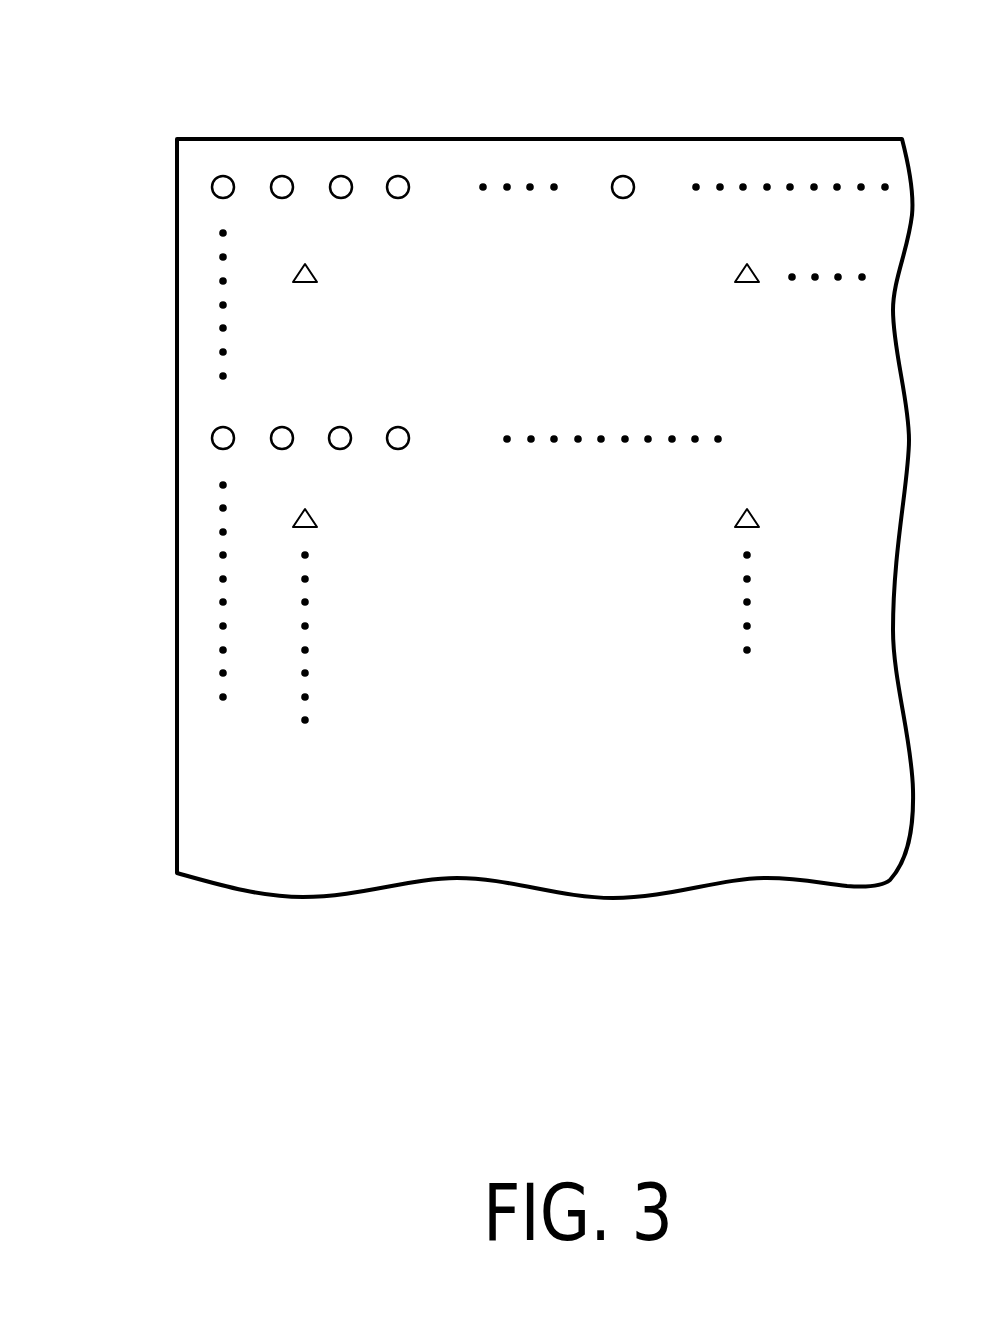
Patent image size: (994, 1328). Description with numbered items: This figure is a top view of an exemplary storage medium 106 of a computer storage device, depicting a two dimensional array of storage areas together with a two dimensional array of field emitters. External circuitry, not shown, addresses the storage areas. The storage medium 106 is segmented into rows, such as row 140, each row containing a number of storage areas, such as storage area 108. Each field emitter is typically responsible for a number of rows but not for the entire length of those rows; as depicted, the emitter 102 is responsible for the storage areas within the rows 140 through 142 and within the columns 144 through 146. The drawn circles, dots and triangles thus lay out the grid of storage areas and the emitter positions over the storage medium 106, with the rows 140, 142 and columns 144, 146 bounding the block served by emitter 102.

The field emitter 102 is at (315, 273).
The storage medium 106 is at (777, 139).
The storage area 108 is at (222, 183).
The row 140 is at (203, 200).
The row 142 is at (203, 447).
The column 144 is at (261, 114).
The column 146 is at (627, 162).